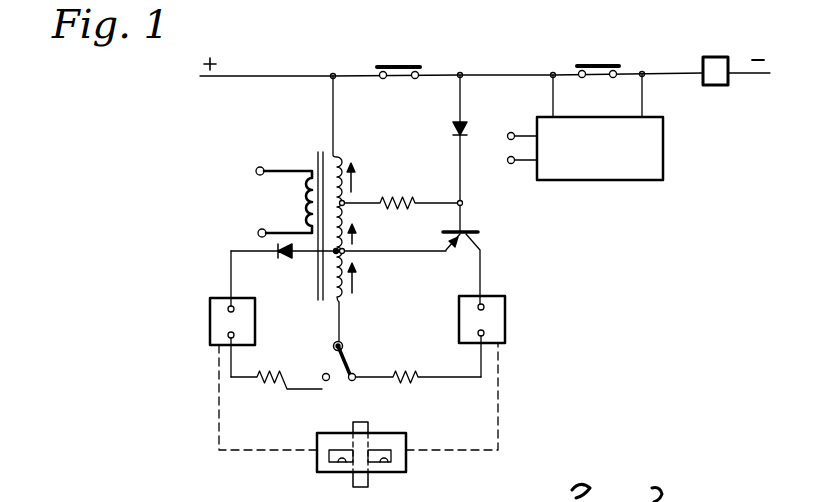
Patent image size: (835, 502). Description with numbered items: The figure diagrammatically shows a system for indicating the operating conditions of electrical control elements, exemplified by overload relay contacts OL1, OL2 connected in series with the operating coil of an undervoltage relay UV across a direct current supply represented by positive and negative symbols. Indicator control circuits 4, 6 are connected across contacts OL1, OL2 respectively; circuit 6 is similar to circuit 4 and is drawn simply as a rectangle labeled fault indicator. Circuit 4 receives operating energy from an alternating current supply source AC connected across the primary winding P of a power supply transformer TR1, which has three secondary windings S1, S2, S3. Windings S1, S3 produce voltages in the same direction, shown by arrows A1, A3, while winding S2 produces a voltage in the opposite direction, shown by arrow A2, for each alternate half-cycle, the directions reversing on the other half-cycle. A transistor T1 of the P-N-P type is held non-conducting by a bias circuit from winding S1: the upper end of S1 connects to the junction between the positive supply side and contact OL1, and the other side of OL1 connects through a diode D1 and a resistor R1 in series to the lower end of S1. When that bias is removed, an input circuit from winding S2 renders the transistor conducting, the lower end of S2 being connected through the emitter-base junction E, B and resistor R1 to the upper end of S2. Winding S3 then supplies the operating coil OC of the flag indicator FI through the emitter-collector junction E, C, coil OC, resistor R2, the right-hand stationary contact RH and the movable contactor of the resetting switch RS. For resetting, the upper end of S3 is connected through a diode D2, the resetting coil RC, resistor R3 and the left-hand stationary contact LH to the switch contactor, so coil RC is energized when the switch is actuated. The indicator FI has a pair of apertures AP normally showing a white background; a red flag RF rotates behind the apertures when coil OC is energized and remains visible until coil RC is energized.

The overload relay contact OL1 is at (399, 80).
The overload relay contact OL2 is at (598, 79).
The undervoltage relay UV is at (732, 78).
The indicator control circuit 6 is at (663, 145).
The alternating current supply source AC is at (248, 188).
The diode D1 is at (452, 130).
The power supply transformer TR1 is at (319, 151).
The primary winding P is at (302, 199).
The secondary winding S1 is at (340, 154).
The secondary winding S2 is at (345, 226).
The secondary winding S3 is at (342, 297).
The arrow A1 is at (356, 176).
The arrow A2 is at (357, 239).
The arrow A3 is at (357, 276).
The resistor R1 is at (398, 195).
The transistor T1 is at (473, 228).
The base B is at (453, 218).
The emitter E is at (396, 242).
The collector C is at (496, 238).
The indicator control circuit 4 is at (423, 305).
The diode D2 is at (286, 260).
The resetting coil RC is at (208, 310).
The operating coil OC is at (507, 306).
The resistor R3 is at (266, 372).
The left-hand stationary contact LH is at (325, 381).
The resetting switch RS is at (336, 351).
The right-hand stationary contact RH is at (356, 372).
The resistor R2 is at (398, 372).
The flag indicator FI is at (317, 456).
The red flag RF is at (366, 426).
The apertures AP is at (391, 480).